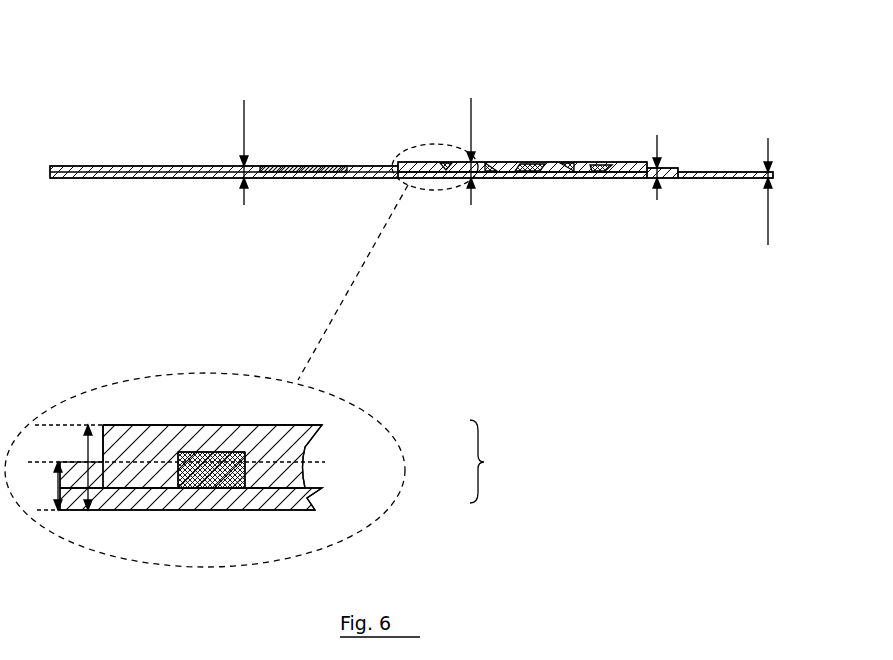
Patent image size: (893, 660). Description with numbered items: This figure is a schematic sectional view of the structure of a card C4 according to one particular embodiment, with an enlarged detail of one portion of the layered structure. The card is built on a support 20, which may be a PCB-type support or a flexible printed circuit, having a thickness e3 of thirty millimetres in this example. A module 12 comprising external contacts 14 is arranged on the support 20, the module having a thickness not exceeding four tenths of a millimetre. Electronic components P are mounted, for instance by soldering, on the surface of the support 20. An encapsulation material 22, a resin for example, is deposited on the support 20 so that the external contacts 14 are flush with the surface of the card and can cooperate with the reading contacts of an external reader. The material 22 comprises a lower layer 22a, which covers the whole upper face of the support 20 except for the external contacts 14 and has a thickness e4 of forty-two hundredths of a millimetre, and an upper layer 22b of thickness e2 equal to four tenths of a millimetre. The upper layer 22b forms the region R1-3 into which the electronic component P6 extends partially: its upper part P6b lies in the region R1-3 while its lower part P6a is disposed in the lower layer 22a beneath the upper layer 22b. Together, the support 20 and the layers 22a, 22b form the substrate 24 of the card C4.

The card C4 is at (572, 82).
The module 12 is at (317, 165).
The external contacts 14 is at (344, 160).
The encapsulation material 22 is at (636, 162).
The lower layer 22a is at (308, 477).
The upper layer 22b is at (307, 447).
The support 20 is at (666, 178).
The substrate 24 is at (490, 461).
The electronic components P is at (603, 163).
The electronic component P6 is at (207, 487).
The lower part of electronic component P6a is at (178, 483).
The upper part of electronic component P6b is at (198, 452).
The region R1-3 is at (130, 436).
The thickness of upper layer e2 is at (265, 304).
The thickness of support e3 is at (780, 191).
The thickness of lower layer e4 is at (682, 122).